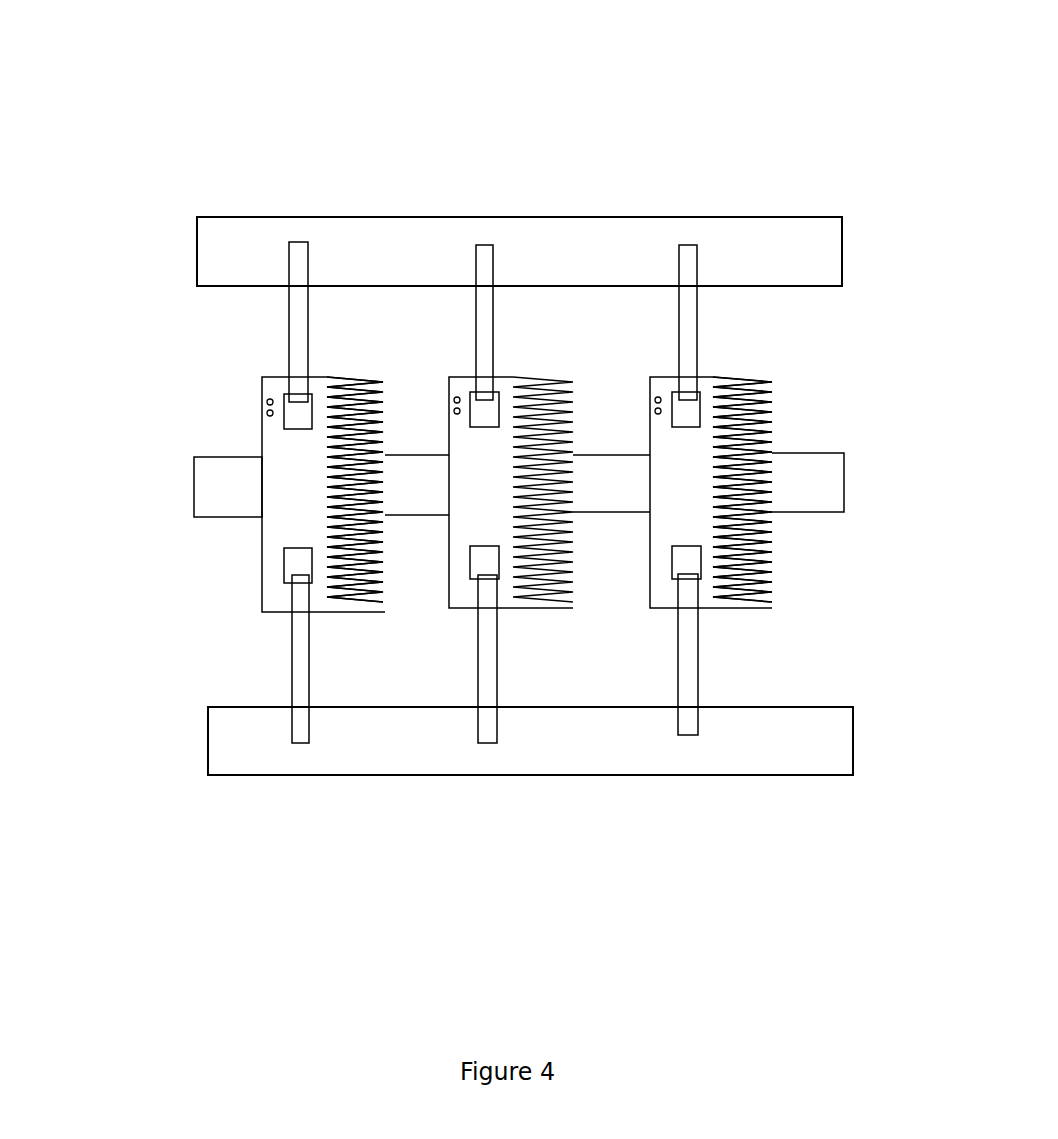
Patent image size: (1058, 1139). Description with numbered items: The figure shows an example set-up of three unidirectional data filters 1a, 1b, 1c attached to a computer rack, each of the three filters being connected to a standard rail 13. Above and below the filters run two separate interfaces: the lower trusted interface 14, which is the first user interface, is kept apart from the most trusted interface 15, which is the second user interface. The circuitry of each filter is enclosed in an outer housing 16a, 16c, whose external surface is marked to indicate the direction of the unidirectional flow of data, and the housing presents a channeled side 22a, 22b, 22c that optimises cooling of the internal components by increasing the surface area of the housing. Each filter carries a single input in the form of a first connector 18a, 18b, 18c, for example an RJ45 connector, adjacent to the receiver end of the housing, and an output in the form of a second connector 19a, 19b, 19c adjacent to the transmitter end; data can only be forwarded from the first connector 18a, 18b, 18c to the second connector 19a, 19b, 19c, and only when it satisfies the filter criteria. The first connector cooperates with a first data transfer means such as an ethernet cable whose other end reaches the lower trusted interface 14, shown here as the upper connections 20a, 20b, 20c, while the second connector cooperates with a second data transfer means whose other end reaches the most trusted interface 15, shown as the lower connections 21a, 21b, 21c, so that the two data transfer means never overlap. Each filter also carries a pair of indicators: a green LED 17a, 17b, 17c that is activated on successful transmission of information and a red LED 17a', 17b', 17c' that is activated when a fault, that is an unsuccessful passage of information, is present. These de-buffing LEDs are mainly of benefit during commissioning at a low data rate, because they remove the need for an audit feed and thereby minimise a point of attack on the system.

The data filter 1a is at (322, 612).
The data filter 1b is at (505, 598).
The data filter 1c is at (703, 512).
The standard rail 13 is at (197, 480).
The lower trusted interface 14 is at (790, 248).
The most trusted interface 15 is at (226, 742).
The outer housing 16a is at (351, 582).
The outer housing 16c is at (715, 395).
The green LED 17a is at (149, 427).
The red LED 17a' is at (144, 362).
The green LED 17b is at (396, 282).
The red LED 17b' is at (401, 249).
The green LED 17c is at (615, 277).
The red LED 17c' is at (634, 255).
The first connector 18a is at (302, 412).
The first connector 18b is at (494, 413).
The first connector 18c is at (702, 423).
The second connector 19a is at (285, 563).
The second connector 19b is at (472, 562).
The second connector 19c is at (672, 557).
The upper rod of first unit 20a is at (297, 272).
The upper rod of second unit 20b is at (484, 268).
The upper rod of third unit 20c is at (692, 262).
The lower rod of first unit 21a is at (302, 667).
The lower rod of second unit 21b is at (485, 667).
The lower rod of third unit 21c is at (690, 685).
The channeled side 22a is at (378, 382).
The channeled side 22b is at (560, 537).
The channeled side 22c is at (774, 430).